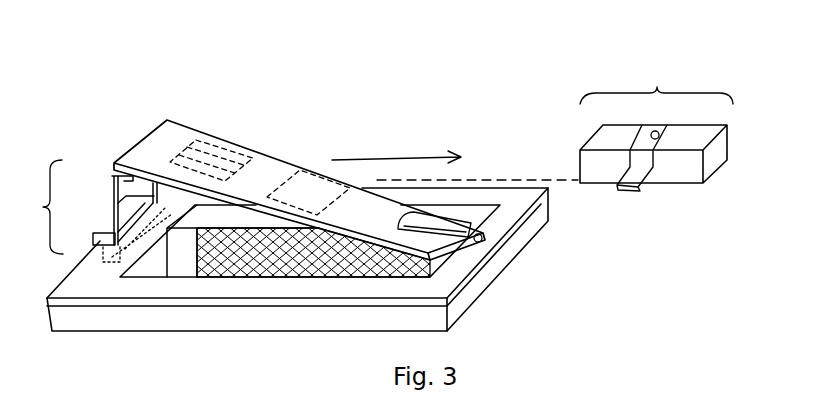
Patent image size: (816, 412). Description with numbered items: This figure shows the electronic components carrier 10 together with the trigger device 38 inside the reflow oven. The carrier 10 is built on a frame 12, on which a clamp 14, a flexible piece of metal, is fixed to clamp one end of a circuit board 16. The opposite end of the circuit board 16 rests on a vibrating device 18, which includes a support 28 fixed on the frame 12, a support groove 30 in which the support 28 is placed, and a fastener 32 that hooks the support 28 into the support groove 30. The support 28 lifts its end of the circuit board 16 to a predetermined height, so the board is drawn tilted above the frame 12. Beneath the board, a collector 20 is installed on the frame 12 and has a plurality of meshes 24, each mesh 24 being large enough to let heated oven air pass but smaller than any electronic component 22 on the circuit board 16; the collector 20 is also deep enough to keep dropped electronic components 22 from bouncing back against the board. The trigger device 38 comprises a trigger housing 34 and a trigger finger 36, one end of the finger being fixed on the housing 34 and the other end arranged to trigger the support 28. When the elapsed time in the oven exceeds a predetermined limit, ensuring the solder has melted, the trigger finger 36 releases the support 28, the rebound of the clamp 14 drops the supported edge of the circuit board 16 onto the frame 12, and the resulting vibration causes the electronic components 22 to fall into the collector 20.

The electronic components carrier 10 is at (434, 122).
The frame 12 is at (157, 288).
The clamp 14 is at (483, 239).
The circuit board 16 is at (268, 158).
The vibrating device 18 is at (88, 211).
The collector 20 is at (331, 268).
The electronic components 22 is at (208, 148).
The mesh 24 is at (245, 277).
The support 28 is at (113, 183).
The support groove 30 is at (103, 246).
The fastener 32 is at (112, 226).
The trigger housing 34 is at (632, 130).
The trigger finger 36 is at (667, 127).
The trigger device 38 is at (656, 131).